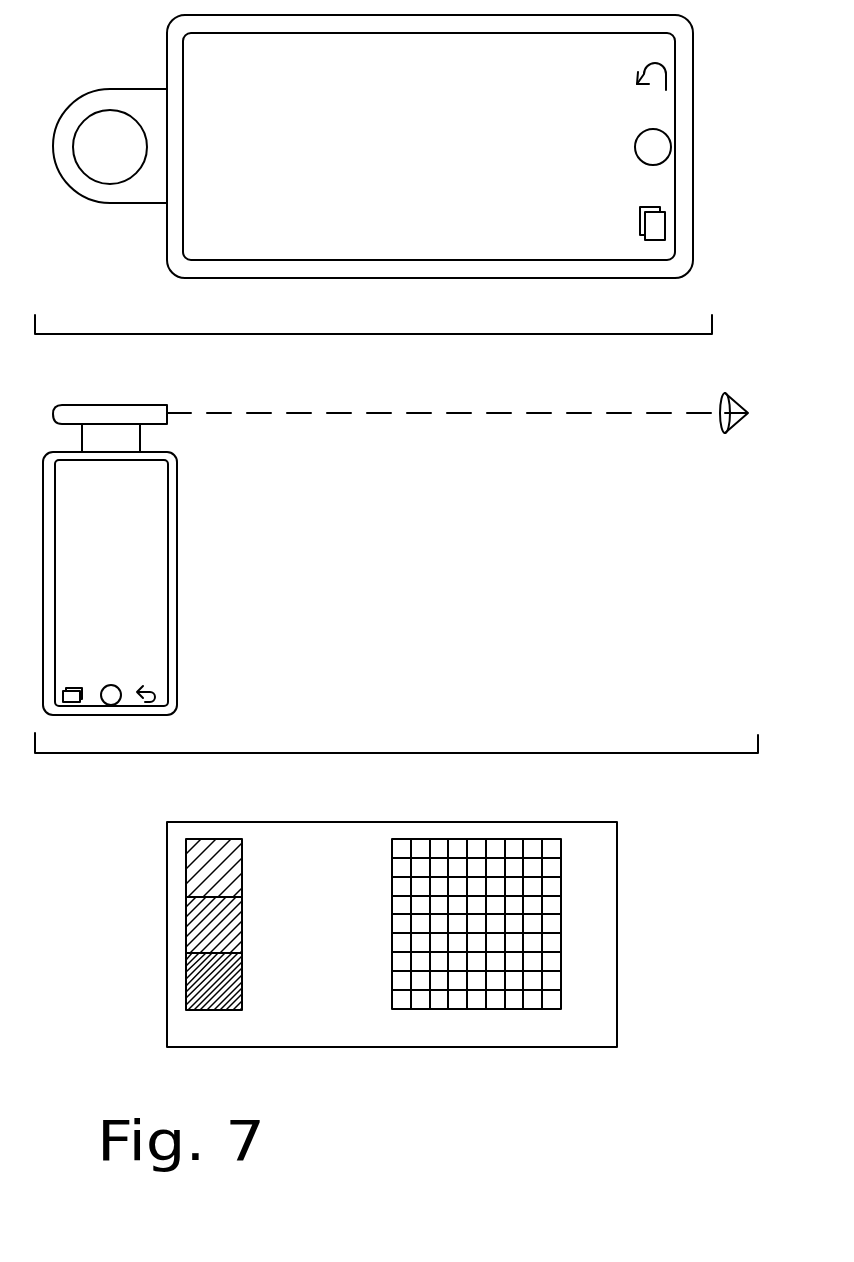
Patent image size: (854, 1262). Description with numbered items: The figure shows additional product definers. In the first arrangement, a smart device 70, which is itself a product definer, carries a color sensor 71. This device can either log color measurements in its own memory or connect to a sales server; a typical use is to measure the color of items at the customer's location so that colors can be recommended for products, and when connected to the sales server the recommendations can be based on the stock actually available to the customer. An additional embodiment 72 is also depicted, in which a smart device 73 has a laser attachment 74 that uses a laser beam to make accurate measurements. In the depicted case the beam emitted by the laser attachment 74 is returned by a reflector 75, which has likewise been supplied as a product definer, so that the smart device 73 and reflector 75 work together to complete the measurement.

The smart device 70 is at (673, 334).
The color sensor 71 is at (90, 113).
The additional embodiment 72 is at (675, 753).
The smart device 73 is at (178, 657).
The laser attachment 74 is at (158, 425).
The reflector 75 is at (737, 422).